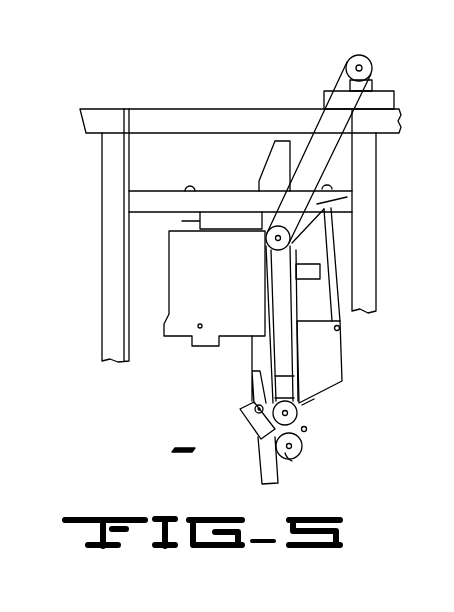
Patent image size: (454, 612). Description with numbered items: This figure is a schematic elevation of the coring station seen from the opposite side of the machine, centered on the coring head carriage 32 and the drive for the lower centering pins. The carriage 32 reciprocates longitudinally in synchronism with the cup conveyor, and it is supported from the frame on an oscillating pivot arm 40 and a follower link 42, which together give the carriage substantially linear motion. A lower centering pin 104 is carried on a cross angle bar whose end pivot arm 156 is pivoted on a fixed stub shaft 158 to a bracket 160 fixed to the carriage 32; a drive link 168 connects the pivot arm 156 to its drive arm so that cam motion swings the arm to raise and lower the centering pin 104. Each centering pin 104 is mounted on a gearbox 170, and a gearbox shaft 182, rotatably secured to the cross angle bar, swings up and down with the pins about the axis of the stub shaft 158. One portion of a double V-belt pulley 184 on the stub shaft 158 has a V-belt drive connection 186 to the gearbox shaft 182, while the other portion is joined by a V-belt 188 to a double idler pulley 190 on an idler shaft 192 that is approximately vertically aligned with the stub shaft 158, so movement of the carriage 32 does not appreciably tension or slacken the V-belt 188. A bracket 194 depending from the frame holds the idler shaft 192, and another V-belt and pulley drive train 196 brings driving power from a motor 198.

The coring head carriage 32 is at (160, 288).
The pivot arm 40 is at (188, 221).
The follower link 42 is at (326, 238).
The lower centering pin 104 is at (300, 433).
The pivot arm 156 is at (240, 423).
The stub shaft 158 is at (286, 412).
The bracket 160 is at (302, 404).
The drive link 168 is at (250, 369).
The gearbox 170 is at (288, 460).
The gearbox shaft 182 is at (298, 442).
The double V-belt pulley 184 is at (305, 428).
The V-belt drive connection 186 is at (257, 437).
The V-belt 188 is at (262, 290).
The double idler pulley 190 is at (264, 257).
The idler shaft 192 is at (265, 235).
The bracket 194 is at (317, 203).
The V-belt and pulley drive train 196 is at (338, 146).
The motor 198 is at (354, 55).